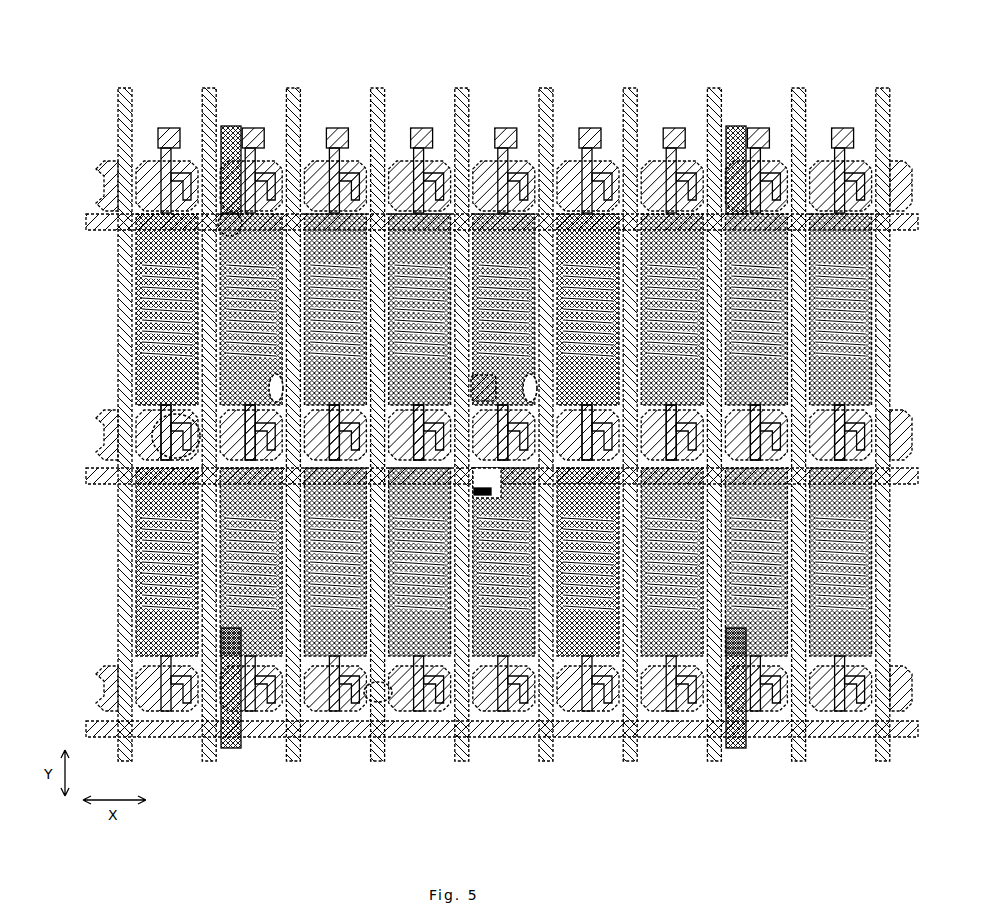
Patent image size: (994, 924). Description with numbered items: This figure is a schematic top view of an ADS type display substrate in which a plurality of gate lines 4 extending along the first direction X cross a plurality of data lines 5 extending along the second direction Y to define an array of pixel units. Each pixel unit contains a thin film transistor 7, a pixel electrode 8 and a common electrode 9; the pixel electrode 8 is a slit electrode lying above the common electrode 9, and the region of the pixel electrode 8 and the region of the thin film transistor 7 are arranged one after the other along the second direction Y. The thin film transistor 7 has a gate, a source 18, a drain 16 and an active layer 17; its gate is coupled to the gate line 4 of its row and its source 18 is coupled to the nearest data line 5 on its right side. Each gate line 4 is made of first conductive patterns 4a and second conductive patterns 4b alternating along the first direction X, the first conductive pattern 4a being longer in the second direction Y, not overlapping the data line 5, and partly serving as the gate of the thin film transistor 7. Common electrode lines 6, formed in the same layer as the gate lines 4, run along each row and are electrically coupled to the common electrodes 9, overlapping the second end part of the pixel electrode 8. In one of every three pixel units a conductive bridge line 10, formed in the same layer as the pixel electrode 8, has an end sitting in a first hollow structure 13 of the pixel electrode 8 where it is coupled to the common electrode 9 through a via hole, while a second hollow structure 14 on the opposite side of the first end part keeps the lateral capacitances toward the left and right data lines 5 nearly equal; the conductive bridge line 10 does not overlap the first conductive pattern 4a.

The gate line 4 is at (95, 674).
The first conductive pattern 4a is at (333, 700).
The second conductive pattern 4b is at (383, 695).
The data line 5 is at (876, 78).
The common electrode line 6 is at (78, 721).
The thin film transistor 7 is at (150, 410).
The pixel electrode 8 is at (126, 310).
The common electrode 9 is at (94, 293).
The conductive bridge line 10 is at (478, 482).
The first hollow structure 13 is at (476, 366).
The second hollow structure 14 is at (524, 366).
The drain 16 is at (160, 680).
The active layer 17 is at (158, 688).
The source 18 is at (165, 672).